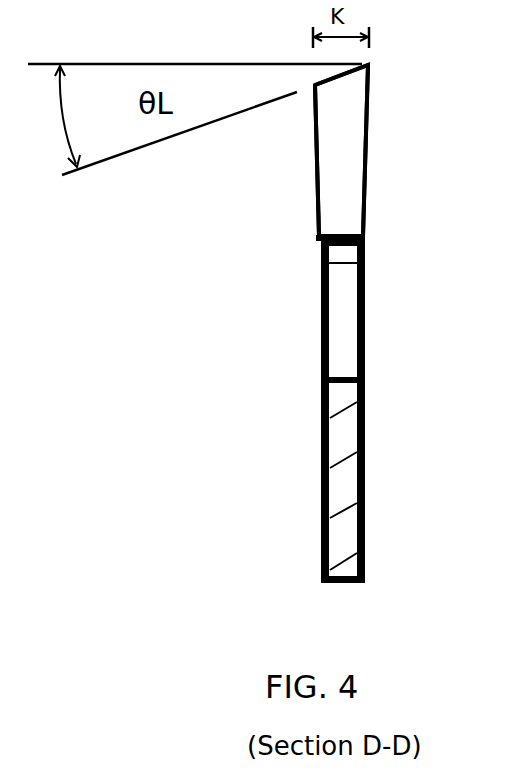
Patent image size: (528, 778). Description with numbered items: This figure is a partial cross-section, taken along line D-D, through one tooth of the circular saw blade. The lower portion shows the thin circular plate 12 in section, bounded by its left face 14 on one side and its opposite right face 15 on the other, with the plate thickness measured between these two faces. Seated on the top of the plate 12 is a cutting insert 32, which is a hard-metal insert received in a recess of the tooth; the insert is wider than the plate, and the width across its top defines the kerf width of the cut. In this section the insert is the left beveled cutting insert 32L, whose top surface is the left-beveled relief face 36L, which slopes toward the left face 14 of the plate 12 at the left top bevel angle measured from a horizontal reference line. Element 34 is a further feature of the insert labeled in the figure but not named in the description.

The circular plate 12 is at (343, 527).
The left face 14 is at (322, 454).
The right face 15 is at (363, 457).
The cutting insert 32 is at (359, 197).
The left beveled cutting insert 32L is at (358, 137).
The blade inner face 34 is at (334, 193).
The left-beveled relief face 36L is at (314, 78).